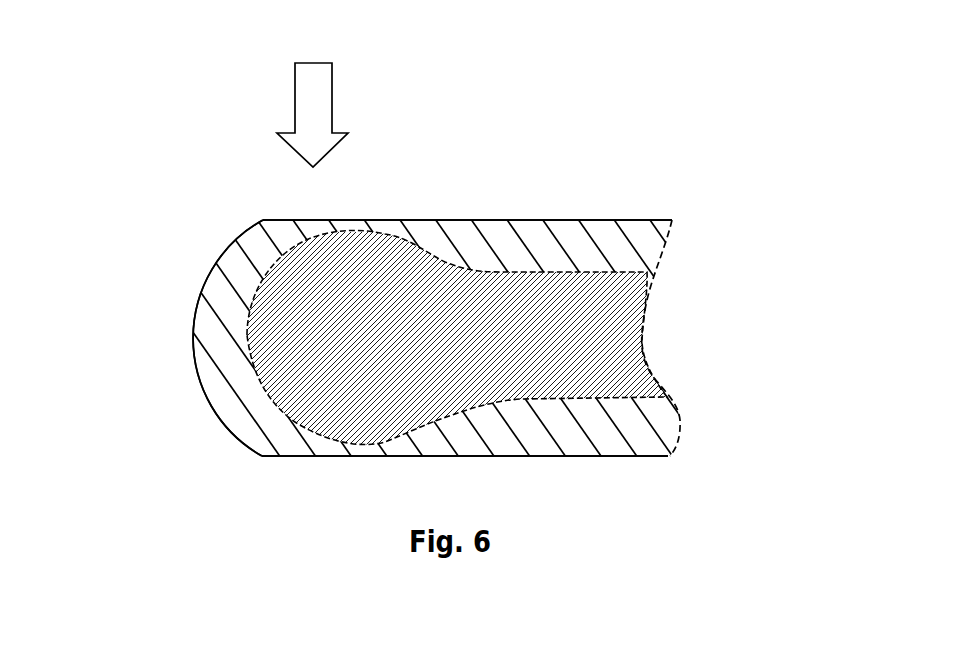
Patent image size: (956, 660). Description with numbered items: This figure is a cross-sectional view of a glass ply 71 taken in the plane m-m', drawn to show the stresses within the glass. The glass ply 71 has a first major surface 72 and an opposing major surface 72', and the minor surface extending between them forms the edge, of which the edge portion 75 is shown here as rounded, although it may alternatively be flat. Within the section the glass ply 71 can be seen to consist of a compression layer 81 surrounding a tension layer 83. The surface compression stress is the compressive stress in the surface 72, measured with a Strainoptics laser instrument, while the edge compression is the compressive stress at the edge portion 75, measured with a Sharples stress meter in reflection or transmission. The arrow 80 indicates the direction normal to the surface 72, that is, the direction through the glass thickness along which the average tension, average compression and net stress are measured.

The glass ply 71 is at (570, 85).
The first major surface 72 is at (467, 183).
The opposing major surface 72' is at (488, 497).
The edge portion 75 is at (150, 252).
The arrow 80 is at (312, 97).
The compression layer 81 is at (608, 237).
The tension layer 83 is at (615, 330).